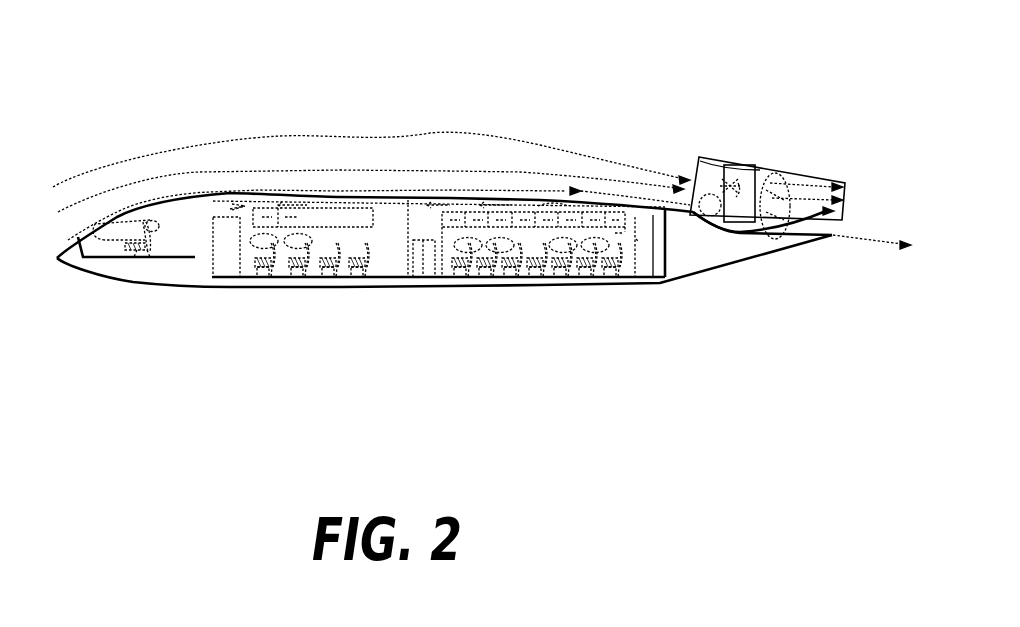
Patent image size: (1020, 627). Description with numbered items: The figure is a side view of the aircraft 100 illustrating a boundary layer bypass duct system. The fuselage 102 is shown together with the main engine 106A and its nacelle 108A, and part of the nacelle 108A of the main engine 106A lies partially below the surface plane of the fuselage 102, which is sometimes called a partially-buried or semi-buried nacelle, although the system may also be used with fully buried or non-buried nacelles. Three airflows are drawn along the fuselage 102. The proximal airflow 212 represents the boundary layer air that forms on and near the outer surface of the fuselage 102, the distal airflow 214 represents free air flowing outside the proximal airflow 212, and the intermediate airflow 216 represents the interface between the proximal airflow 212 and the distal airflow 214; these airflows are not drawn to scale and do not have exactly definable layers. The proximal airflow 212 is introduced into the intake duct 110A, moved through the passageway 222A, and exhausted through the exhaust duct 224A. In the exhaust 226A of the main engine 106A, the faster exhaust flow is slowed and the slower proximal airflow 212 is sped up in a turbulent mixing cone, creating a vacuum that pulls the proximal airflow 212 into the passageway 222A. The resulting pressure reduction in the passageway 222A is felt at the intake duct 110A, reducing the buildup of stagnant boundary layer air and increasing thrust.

The aircraft 100 is at (247, 90).
The fuselage 102 is at (313, 195).
The main engine 106A is at (732, 185).
The nacelle 108A is at (740, 155).
The intake duct 110A is at (690, 210).
The proximal airflow 212 is at (68, 240).
The distal airflow 214 is at (358, 167).
The intermediate airflow 216 is at (355, 197).
The passageway 222A is at (740, 237).
The exhaust duct 224A is at (827, 237).
The exhaust 226A is at (803, 197).